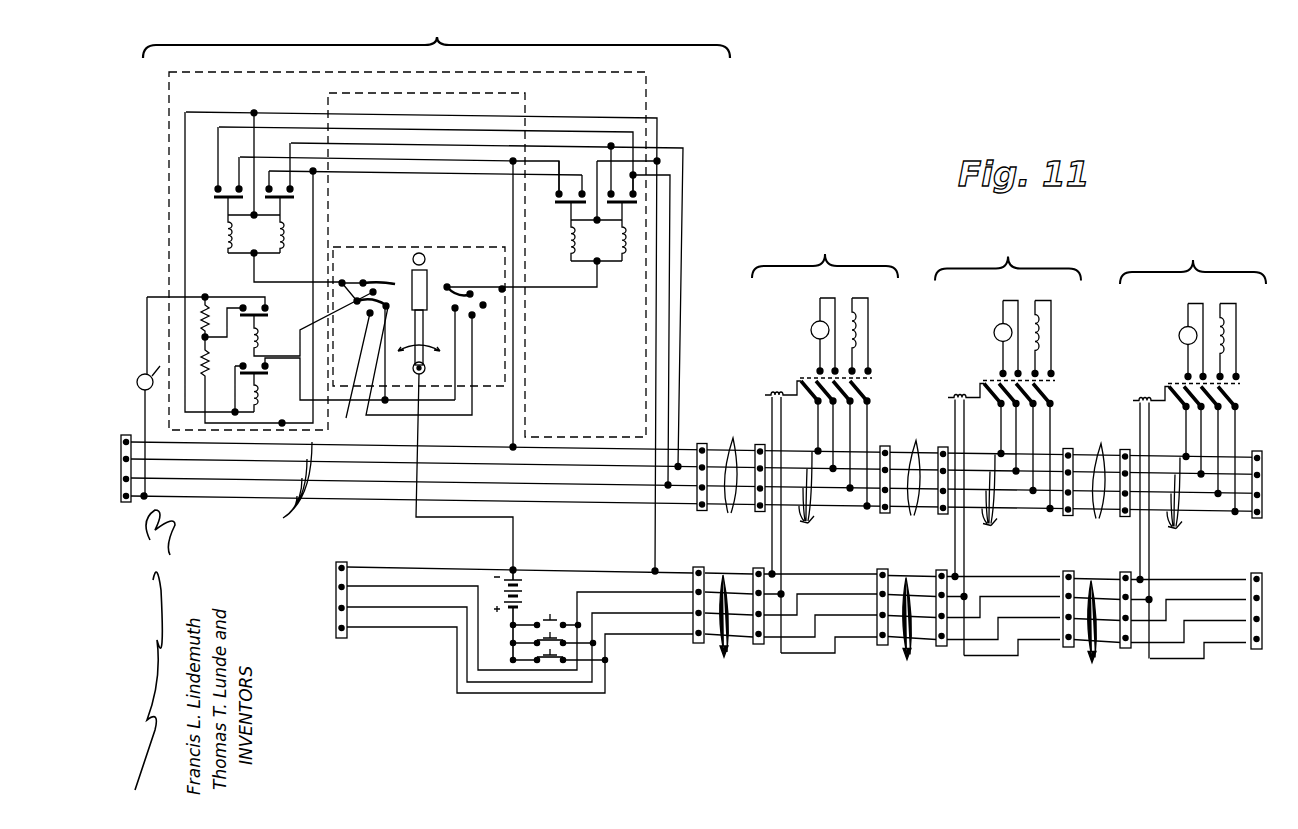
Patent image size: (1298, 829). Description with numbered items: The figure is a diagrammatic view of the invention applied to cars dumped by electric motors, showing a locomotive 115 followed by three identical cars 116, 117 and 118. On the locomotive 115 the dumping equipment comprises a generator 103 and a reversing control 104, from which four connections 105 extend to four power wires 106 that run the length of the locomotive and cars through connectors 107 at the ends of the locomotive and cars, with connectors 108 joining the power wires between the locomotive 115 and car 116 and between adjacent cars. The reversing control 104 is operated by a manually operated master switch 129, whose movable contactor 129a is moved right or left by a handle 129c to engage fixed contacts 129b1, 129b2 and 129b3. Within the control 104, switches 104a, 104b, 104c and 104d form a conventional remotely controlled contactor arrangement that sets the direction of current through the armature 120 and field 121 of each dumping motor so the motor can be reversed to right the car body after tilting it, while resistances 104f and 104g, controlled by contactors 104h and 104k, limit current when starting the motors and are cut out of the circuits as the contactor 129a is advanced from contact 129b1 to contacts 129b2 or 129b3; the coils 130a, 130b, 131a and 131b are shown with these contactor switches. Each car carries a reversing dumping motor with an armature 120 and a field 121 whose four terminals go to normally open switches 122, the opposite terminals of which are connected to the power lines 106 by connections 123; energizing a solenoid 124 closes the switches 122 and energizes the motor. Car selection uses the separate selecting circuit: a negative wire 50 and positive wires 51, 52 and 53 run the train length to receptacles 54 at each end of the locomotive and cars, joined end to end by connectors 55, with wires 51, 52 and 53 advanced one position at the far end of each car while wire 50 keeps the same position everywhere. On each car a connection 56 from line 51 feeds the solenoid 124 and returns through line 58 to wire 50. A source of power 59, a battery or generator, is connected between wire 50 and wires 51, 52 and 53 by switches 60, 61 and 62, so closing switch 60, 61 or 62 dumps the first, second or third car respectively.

The negative wire 50 is at (592, 103).
The positive wire 51 is at (489, 672).
The positive wire 52 is at (543, 684).
The positive wire 53 is at (597, 695).
The connector receptacle 54 is at (340, 638).
The connector 55 is at (911, 630).
The connection 56 is at (796, 554).
The return line 58 is at (771, 541).
The source of power 59 is at (524, 586).
The switch 60 is at (558, 630).
The switch 61 is at (537, 641).
The switch 62 is at (537, 658).
The generator 103 is at (140, 393).
The reversing control 104 is at (604, 80).
The switch 104a is at (553, 198).
The switch 104b is at (214, 193).
The switch 104c is at (295, 193).
The switch 104d is at (640, 200).
The resistance 104f is at (205, 305).
The resistance 104g is at (205, 358).
The contactor 104h is at (256, 378).
The contactor 104k is at (262, 300).
The connections 105 is at (147, 437).
The power wires 106 is at (282, 512).
The connector 107 is at (126, 503).
The connector 108 is at (907, 468).
The locomotive 115 is at (437, 40).
The car 116 is at (825, 301).
The car 117 is at (1008, 303).
The car 118 is at (1193, 307).
The armature 120 is at (811, 331).
The field 121 is at (851, 305).
The normally open switches 122 is at (868, 388).
The connections 123 is at (851, 432).
The solenoid 124 is at (772, 392).
The master switch 129 is at (438, 232).
The movable contactor 129a is at (428, 290).
The fixed contact 129b1 is at (342, 280).
The fixed contact 129b2 is at (252, 338).
The fixed contact 129b3 is at (528, 341).
The handle 129c is at (428, 262).
The relay coil 130a is at (565, 238).
The relay coil 130b is at (630, 240).
The relay coil 131a is at (222, 235).
The relay coil 131b is at (288, 235).